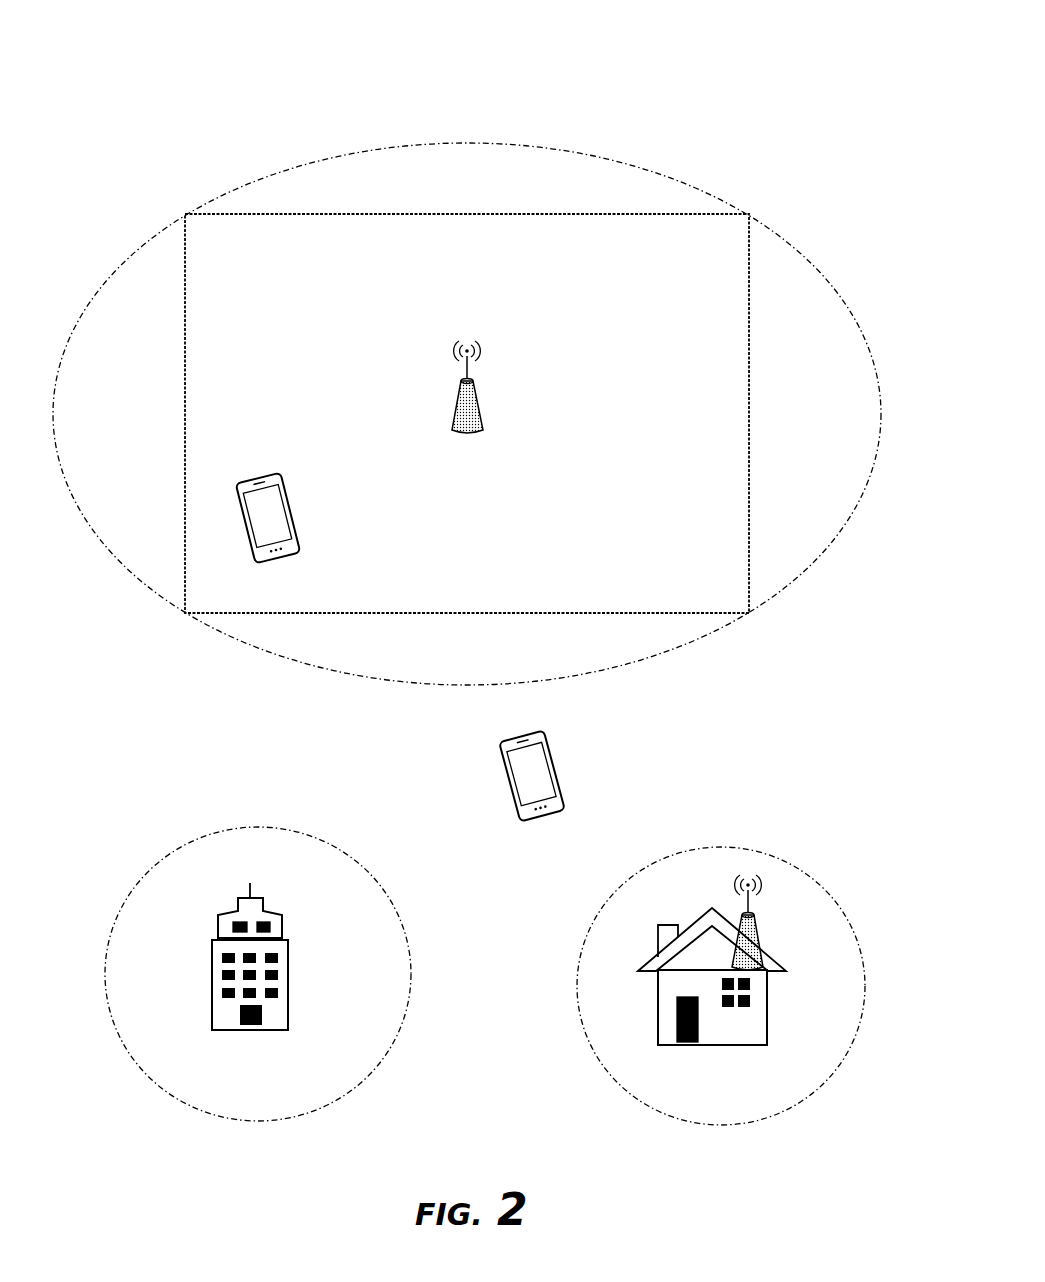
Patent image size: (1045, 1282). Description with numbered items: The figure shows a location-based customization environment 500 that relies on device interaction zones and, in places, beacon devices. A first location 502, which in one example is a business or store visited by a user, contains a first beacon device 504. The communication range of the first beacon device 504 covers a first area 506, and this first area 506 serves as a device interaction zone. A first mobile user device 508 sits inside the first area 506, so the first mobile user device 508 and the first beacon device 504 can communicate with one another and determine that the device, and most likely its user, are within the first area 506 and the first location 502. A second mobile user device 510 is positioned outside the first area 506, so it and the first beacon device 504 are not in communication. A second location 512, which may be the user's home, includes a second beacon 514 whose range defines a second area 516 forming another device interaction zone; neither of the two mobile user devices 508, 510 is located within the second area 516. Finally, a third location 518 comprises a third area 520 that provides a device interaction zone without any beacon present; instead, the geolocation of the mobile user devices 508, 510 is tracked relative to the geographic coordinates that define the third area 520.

The environment 500 is at (768, 68).
The first location 502 is at (185, 268).
The first beacon device 504 is at (480, 393).
The first area 506 is at (125, 565).
The first mobile user device 508 is at (292, 554).
The second mobile user device 510 is at (500, 744).
The second location 512 is at (667, 950).
The second beacon 514 is at (756, 916).
The second area 516 is at (857, 927).
The third location 518 is at (213, 1033).
The third area 520 is at (178, 850).